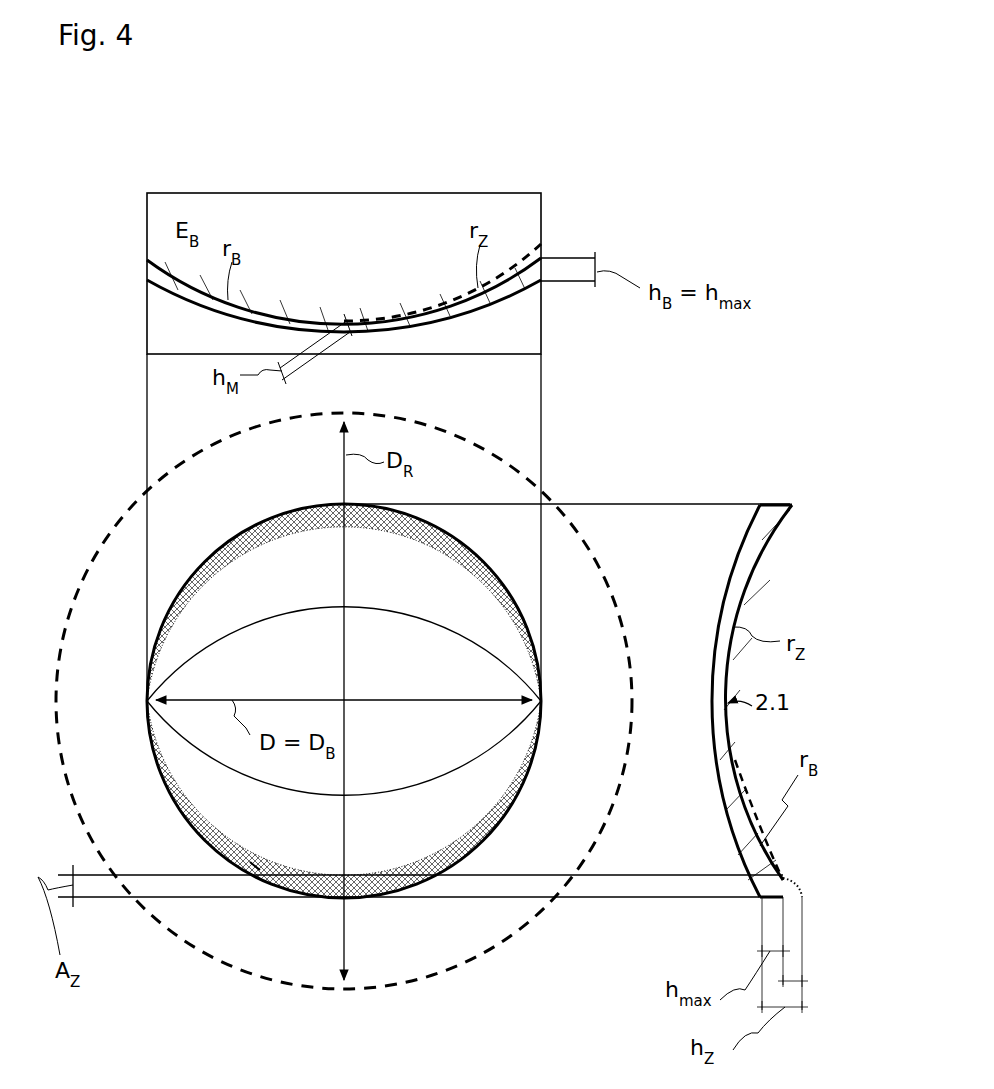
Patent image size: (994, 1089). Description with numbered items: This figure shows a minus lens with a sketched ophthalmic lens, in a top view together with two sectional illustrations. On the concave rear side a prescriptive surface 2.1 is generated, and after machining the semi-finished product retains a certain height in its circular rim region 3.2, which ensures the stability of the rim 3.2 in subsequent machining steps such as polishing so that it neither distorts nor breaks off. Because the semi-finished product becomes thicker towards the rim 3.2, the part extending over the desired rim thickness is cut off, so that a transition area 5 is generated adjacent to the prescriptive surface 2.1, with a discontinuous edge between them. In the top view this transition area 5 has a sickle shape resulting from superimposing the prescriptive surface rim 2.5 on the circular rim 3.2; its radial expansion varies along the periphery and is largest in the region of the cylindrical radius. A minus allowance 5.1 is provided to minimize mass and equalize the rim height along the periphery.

The prescriptive surface 2.1 is at (344, 701).
The rim region 3.2 is at (282, 518).
The prescriptive surface rim 2.5 is at (478, 822).
The transition area 5 is at (254, 860).
The minus allowance 5.1 is at (795, 983).